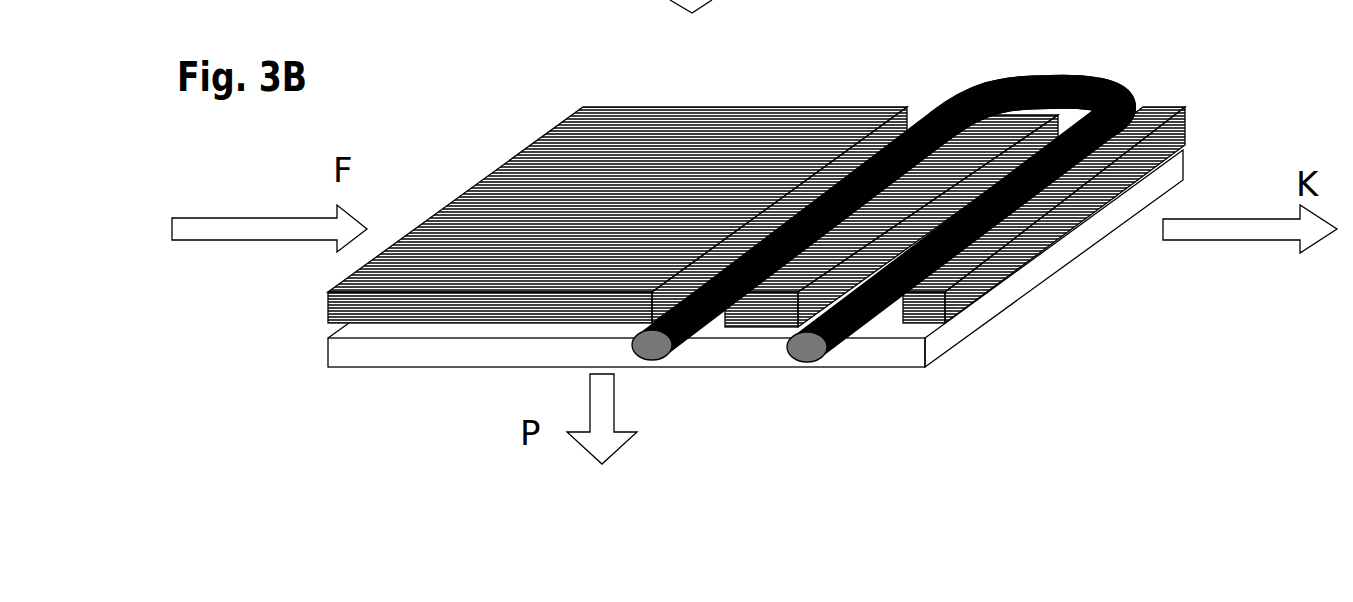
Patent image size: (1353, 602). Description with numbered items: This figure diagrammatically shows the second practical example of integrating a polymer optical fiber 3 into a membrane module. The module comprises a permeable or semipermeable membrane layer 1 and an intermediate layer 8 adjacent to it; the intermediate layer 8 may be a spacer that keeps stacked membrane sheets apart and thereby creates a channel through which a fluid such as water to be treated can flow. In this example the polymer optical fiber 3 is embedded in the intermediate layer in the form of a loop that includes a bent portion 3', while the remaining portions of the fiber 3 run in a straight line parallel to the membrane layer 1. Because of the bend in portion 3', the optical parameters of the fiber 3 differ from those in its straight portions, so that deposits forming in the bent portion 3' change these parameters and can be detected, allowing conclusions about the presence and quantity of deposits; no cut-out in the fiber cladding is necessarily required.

The membrane layer 1 is at (967, 343).
The polymer optical fiber 3 is at (875, 265).
The bent portion 3' is at (1029, 65).
The intermediate layer 8 is at (1007, 278).